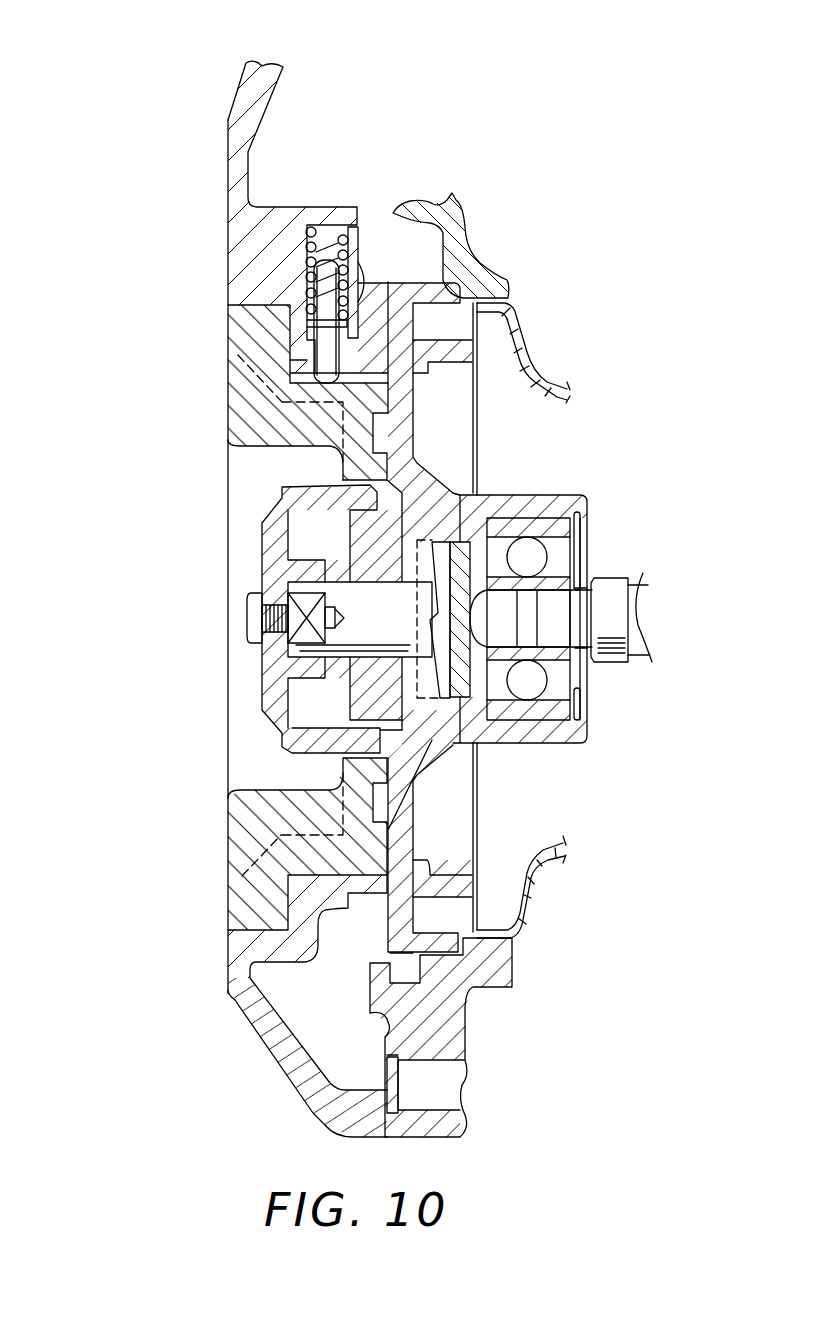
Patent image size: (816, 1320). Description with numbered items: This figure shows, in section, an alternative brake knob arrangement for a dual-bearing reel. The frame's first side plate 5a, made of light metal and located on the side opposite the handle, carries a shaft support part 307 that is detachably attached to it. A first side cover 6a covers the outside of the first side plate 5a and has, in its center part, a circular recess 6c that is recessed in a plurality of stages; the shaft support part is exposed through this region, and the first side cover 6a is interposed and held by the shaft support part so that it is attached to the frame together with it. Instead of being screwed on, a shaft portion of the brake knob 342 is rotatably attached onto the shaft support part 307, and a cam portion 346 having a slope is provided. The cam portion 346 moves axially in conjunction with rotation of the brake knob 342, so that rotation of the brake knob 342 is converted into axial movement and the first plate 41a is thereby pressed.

The first side cover 6a is at (219, 93).
The first side plate 5a is at (464, 208).
The shaft support part 307 is at (438, 326).
The brake knob 342 is at (275, 465).
The first plate 41a is at (467, 562).
The cam portion 346 is at (442, 708).
The recess 6c is at (288, 905).